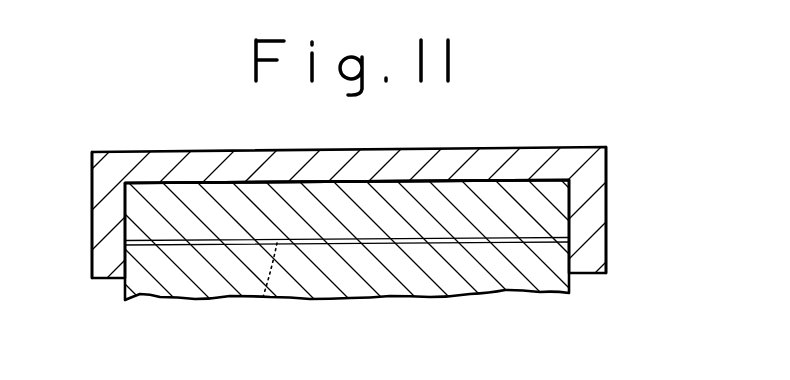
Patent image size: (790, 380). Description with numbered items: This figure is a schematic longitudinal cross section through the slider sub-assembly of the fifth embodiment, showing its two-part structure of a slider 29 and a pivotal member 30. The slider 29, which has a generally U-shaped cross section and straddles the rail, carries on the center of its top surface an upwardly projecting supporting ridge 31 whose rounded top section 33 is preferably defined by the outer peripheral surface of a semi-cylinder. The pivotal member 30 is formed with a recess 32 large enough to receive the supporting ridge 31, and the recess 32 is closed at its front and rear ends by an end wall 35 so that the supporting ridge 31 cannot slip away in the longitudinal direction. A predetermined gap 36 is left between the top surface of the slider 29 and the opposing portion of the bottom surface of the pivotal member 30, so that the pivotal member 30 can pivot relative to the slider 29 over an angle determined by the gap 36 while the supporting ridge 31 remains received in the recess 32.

The slider 29 is at (545, 283).
The pivotal member 30 is at (590, 186).
The supporting ridge 31 is at (374, 198).
The recess 32 is at (447, 181).
The rounded top section 33 is at (296, 197).
The end wall 35 is at (103, 232).
The gap 36 is at (263, 298).